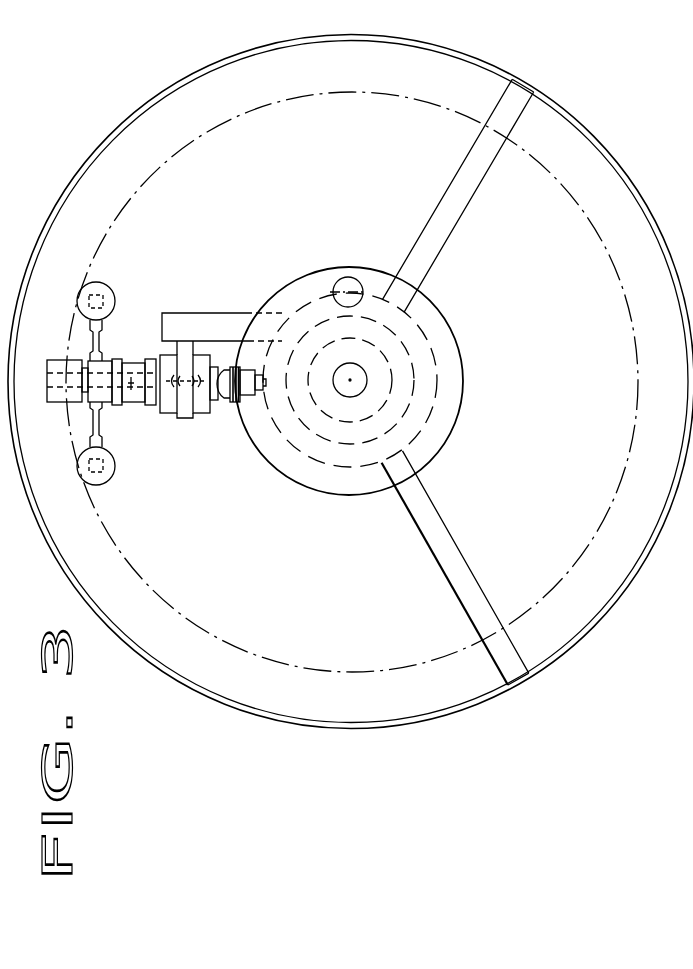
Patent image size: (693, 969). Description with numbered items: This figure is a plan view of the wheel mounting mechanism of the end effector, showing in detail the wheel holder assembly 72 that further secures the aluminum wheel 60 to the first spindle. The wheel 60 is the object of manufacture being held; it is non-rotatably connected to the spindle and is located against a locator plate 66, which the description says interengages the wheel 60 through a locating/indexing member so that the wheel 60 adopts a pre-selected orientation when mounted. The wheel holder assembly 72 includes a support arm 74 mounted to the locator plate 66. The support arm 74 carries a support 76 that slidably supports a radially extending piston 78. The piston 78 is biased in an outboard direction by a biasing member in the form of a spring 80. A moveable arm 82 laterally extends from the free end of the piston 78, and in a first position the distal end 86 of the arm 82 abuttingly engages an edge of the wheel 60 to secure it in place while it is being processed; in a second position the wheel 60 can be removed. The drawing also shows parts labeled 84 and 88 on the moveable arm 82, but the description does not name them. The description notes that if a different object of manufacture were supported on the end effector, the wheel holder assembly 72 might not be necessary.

The aluminum wheel 60 is at (203, 652).
The locator plate 66 is at (325, 484).
The wheel holder assembly 72 is at (195, 454).
The support arm 74 is at (221, 323).
The support 76 is at (178, 418).
The piston 78 is at (131, 405).
The spring 80 is at (227, 403).
The moveable arm 82 is at (92, 423).
The end nut 84 is at (92, 345).
The distal end 86 is at (99, 483).
The upper knob 88 is at (106, 284).